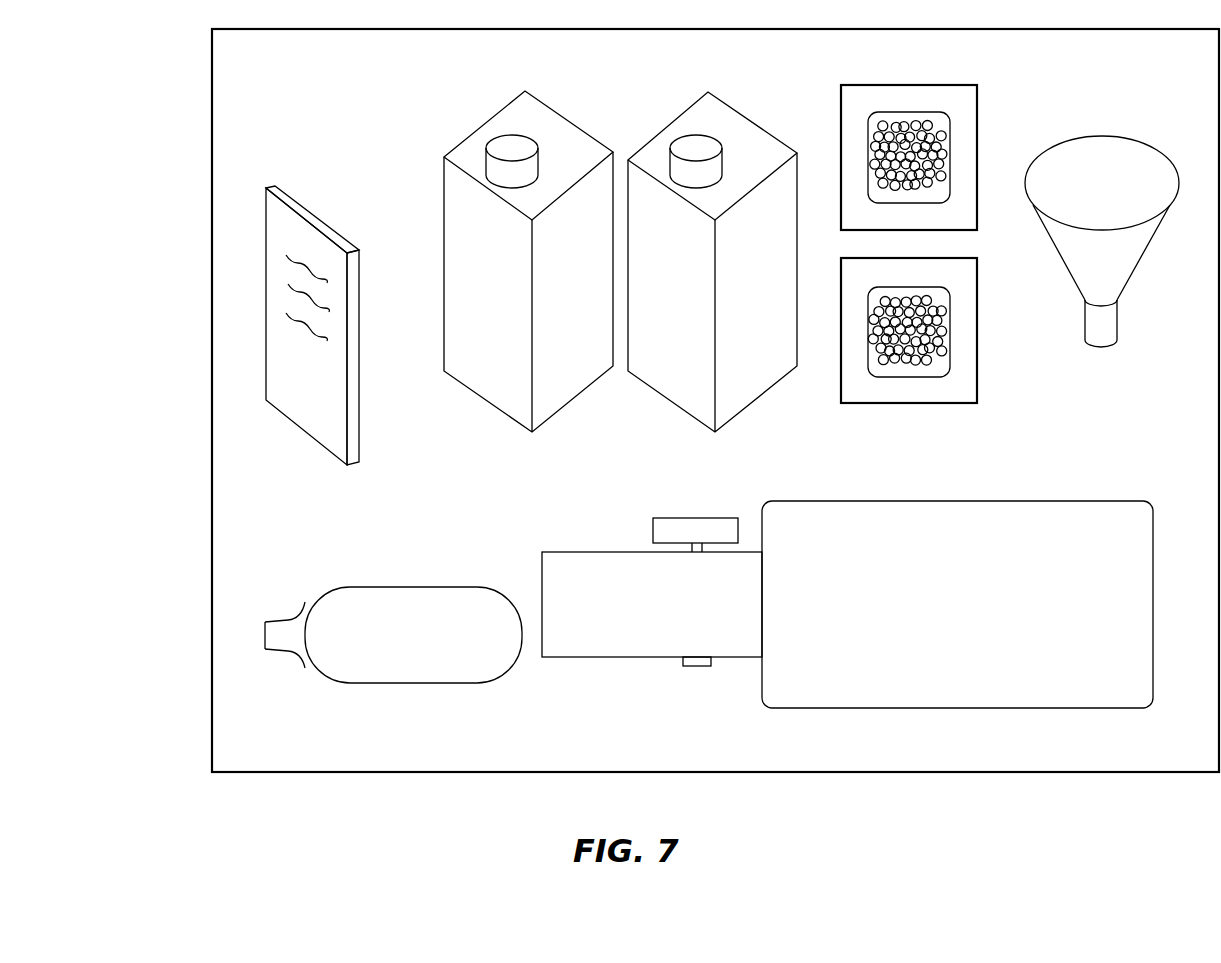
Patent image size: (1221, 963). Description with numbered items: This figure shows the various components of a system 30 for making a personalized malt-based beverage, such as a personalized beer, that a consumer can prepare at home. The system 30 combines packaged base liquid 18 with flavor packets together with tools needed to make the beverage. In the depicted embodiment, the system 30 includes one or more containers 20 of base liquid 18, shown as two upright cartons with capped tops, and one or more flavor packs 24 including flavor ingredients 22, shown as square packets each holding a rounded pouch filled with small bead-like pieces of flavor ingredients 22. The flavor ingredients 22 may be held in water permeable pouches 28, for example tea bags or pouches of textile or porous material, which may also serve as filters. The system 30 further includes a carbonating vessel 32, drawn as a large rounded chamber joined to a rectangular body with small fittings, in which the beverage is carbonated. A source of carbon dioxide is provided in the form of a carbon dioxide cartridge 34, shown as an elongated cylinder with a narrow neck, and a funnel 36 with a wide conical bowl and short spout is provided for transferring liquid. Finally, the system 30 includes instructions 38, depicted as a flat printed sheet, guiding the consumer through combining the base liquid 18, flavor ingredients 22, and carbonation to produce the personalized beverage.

The base liquid 18 is at (604, 431).
The container 20 is at (747, 347).
The flavor ingredients 22 is at (948, 355).
The flavor pack 24 is at (989, 178).
The water permeable pouch 28 is at (940, 308).
The system 30 is at (130, 245).
The carbonating vessel 32 is at (1051, 471).
The carbon dioxide cartridge 34 is at (422, 582).
The funnel 36 is at (1100, 263).
The instructions 38 is at (313, 413).